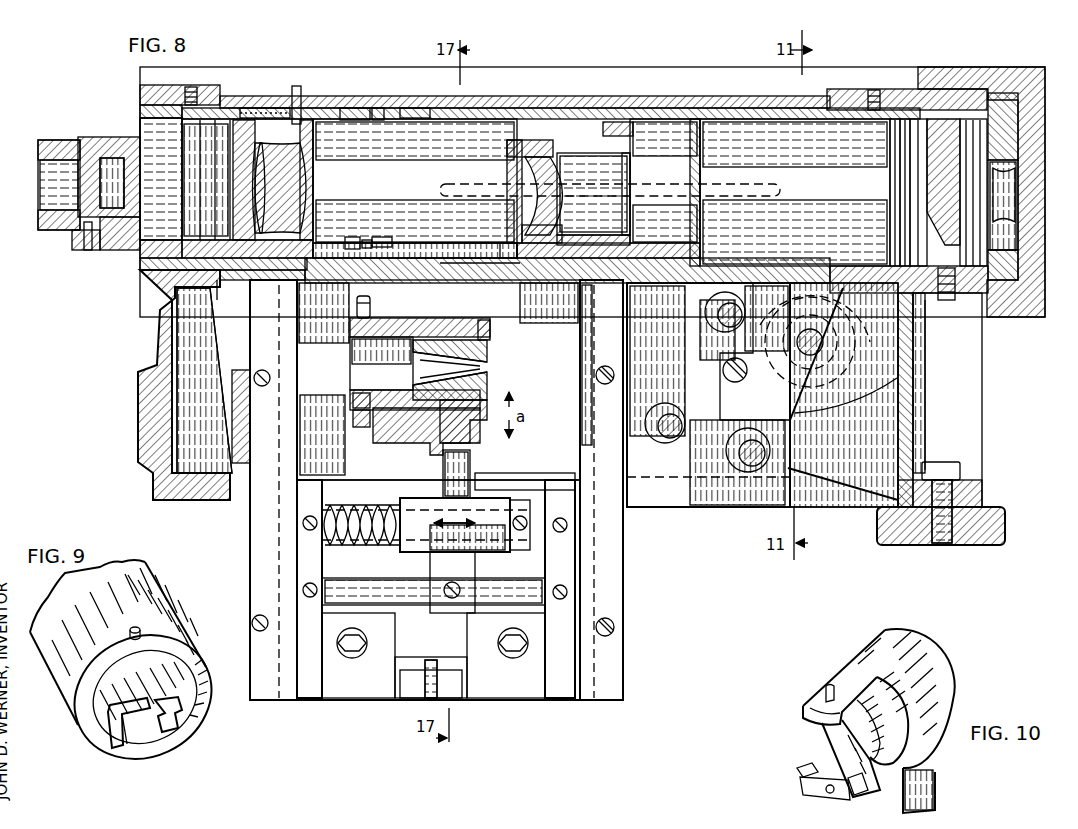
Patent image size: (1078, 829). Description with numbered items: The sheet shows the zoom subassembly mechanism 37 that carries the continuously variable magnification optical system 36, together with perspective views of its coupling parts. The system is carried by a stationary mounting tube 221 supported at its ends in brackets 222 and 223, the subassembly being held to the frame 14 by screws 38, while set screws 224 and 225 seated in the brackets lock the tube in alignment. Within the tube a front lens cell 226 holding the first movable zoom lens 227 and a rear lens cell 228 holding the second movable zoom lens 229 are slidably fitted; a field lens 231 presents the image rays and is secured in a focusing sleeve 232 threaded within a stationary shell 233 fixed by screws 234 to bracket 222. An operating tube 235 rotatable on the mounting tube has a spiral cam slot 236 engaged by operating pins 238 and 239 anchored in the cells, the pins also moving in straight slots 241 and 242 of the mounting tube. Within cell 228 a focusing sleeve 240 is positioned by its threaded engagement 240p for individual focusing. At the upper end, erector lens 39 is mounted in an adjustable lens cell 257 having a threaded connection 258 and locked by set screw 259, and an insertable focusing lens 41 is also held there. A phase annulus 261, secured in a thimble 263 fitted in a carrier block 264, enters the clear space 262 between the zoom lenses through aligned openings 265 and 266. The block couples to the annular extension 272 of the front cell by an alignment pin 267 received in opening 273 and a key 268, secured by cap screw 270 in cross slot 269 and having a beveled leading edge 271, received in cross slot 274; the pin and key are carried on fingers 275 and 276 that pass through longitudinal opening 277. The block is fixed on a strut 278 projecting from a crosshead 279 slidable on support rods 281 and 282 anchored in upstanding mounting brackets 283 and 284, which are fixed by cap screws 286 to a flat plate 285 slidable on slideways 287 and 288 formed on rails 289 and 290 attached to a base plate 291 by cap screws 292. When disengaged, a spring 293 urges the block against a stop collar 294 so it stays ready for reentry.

In FIG. 8, the frame 14 is at (905, 537).
In FIG. 8, the variable magnification optical system 36 is at (350, 206).
In FIG. 8, the subassembly mechanism 37 is at (507, 64).
In FIG. 8, the bolts 38 is at (935, 463).
In FIG. 8, the erector lens 39 is at (927, 200).
In FIG. 8, the insertable focusing lens 41 is at (1016, 195).
In FIG. 8, the mounting tube 221 is at (714, 98).
In FIG. 8, the bracket 222 is at (150, 85).
In FIG. 8, the bracket 223 is at (852, 89).
In FIG. 8, the set screw 224 is at (193, 87).
In FIG. 8, the set screw 225 is at (873, 90).
In FIG. 8, the front lens cell 226 is at (262, 120).
In FIG. 8, the first movable zoom lens 227 is at (300, 175).
In FIG. 8, the rear lens cell 228 is at (675, 176).
In FIG. 8, the second movable zoom lens 229 is at (527, 160).
In FIG. 8, the field lens 231 is at (110, 148).
In FIG. 8, the focusing sleeve 232 is at (58, 140).
In FIG. 8, the stationary shell 233 is at (125, 258).
In FIG. 8, the screws 234 is at (92, 258).
In FIG. 8, the operating tube 235 is at (642, 97).
In FIG. 8, the spiral cam slot 236 is at (315, 96).
In FIG. 8, the operating pin 238 is at (296, 86).
In FIG. 8, the operating pin 239 is at (566, 178).
In FIG. 8, the focusing sleeve 240 is at (633, 222).
In FIG. 8, the threaded engagement 240p is at (630, 218).
In FIG. 8, the straight slot 241 is at (278, 108).
In FIG. 8, the straight slot 242 is at (737, 188).
In FIG. 8, the adjustable lens cell 257 is at (967, 121).
In FIG. 8, the threaded connection 258 is at (935, 121).
In FIG. 8, the set screw 259 is at (968, 295).
In FIG. 8, the phase annulus 261 is at (488, 367).
In FIG. 8, the clear space 262 is at (441, 176).
In FIG. 8, the thimble 263 is at (488, 355).
In FIG. 8, the carrier block 264 is at (484, 330).
In FIG. 10, the carrier block 264 is at (870, 636).
In FIG. 8, the opening 265 is at (512, 262).
In FIG. 8, the opening 266 is at (458, 265).
In FIG. 8, the coupling pin 267 is at (355, 306).
In FIG. 10, the coupling pin 267 is at (824, 694).
In FIG. 8, the coupling key 268 is at (353, 424).
In FIG. 10, the coupling key 268 is at (800, 782).
In FIG. 8, the cross slot 269 is at (352, 422).
In FIG. 10, the cap screw 270 is at (805, 792).
In FIG. 10, the beveled leading edge 271 is at (808, 772).
In FIG. 8, the annular extension 272 is at (362, 98).
In FIG. 9, the annular extension 272 is at (152, 585).
In FIG. 8, the opening 273 is at (380, 100).
In FIG. 9, the opening 273 is at (142, 628).
In FIG. 8, the cross slot 274 is at (392, 262).
In FIG. 9, the cross slot 274 is at (180, 722).
In FIG. 8, the finger 275 is at (384, 320).
In FIG. 10, the finger 275 is at (840, 676).
In FIG. 8, the finger 276 is at (418, 426).
In FIG. 10, the finger 276 is at (848, 752).
In FIG. 8, the longitudinal opening 277 is at (352, 240).
In FIG. 9, the longitudinal opening 277 is at (128, 735).
In FIG. 8, the strut 278 is at (472, 468).
In FIG. 8, the crosshead 279 is at (468, 500).
In FIG. 8, the support rod 281 is at (540, 520).
In FIG. 8, the support rod 282 is at (535, 616).
In FIG. 8, the mounting bracket 283 is at (310, 690).
In FIG. 8, the mounting bracket 284 is at (558, 690).
In FIG. 8, the flat plate 285 is at (435, 643).
In FIG. 8, the cap screws 286 is at (367, 618).
In FIG. 8, the slideway 287 is at (296, 518).
In FIG. 8, the slideway 288 is at (577, 515).
In FIG. 8, the rail 289 is at (248, 545).
In FIG. 8, the rail 290 is at (613, 572).
In FIG. 8, the base plate 291 is at (571, 403).
In FIG. 8, the cap screws 292 is at (614, 380).
In FIG. 8, the spring 293 is at (365, 548).
In FIG. 8, the stop collar 294 is at (527, 565).